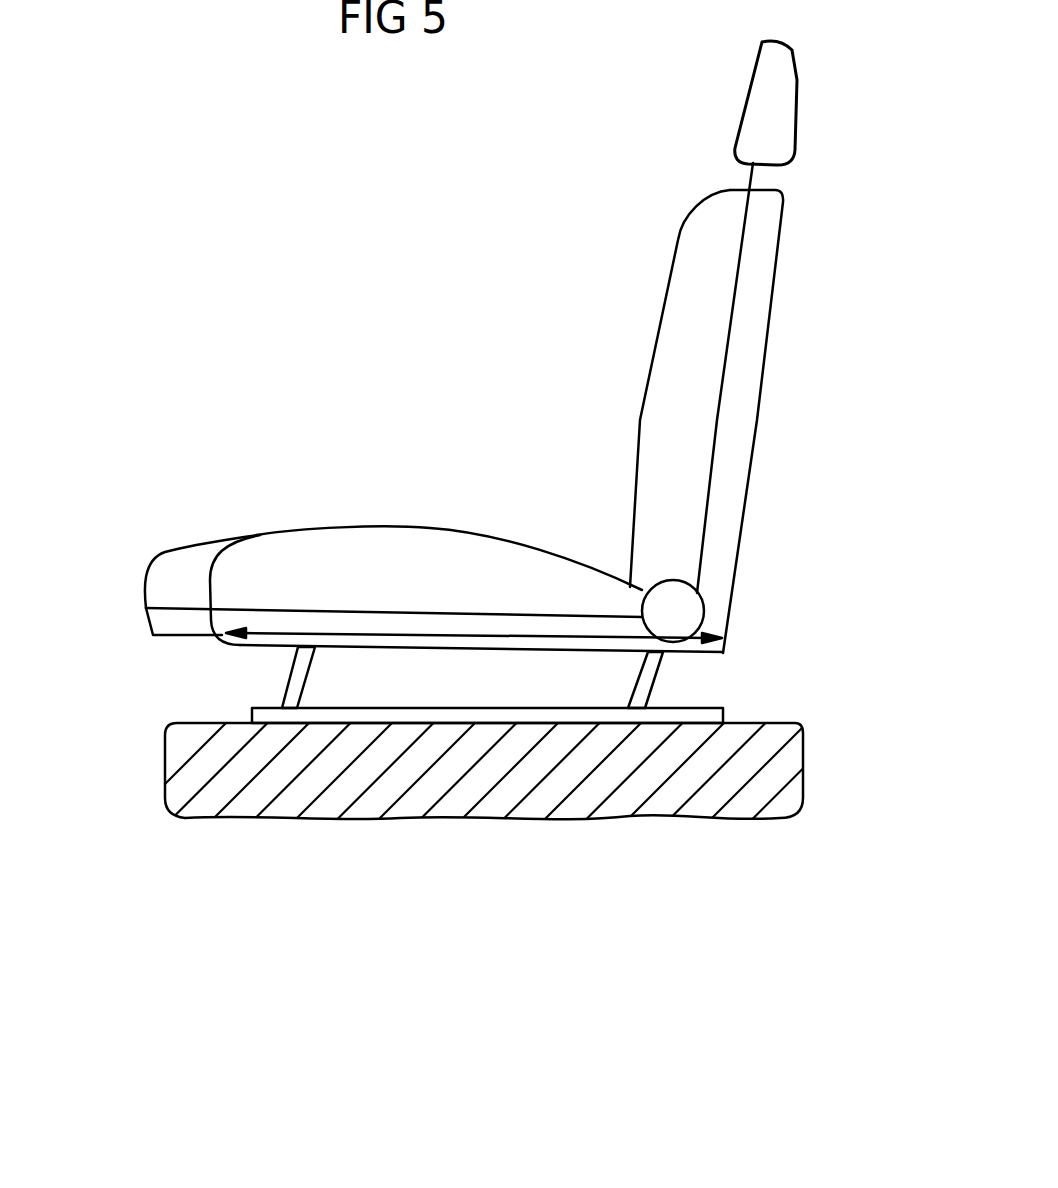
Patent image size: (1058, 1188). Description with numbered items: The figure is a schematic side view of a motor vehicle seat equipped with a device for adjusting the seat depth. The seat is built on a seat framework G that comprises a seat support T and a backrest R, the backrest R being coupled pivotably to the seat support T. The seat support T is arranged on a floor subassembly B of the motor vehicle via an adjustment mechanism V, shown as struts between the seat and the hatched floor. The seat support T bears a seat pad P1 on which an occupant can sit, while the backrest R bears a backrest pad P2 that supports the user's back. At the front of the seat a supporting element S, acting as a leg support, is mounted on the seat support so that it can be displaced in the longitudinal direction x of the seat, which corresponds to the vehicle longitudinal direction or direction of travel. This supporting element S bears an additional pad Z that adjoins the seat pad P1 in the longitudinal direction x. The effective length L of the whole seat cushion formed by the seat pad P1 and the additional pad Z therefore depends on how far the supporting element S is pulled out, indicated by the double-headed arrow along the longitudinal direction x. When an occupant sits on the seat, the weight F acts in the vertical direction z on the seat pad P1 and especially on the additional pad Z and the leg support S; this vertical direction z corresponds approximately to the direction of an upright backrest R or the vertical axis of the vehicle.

The backrest R is at (747, 397).
The backrest pad P2 is at (673, 328).
The seat pad P1 is at (422, 553).
The additional pad Z is at (178, 547).
The supporting element S is at (168, 625).
The seat support T is at (372, 623).
The effective length of the seat cushion L is at (477, 635).
The seat framework G is at (705, 614).
The weight F is at (229, 495).
The adjustment mechanism V is at (313, 665).
The floor subassembly B is at (727, 775).
The longitudinal direction of the seat x is at (115, 688).
The vertical direction z is at (920, 928).